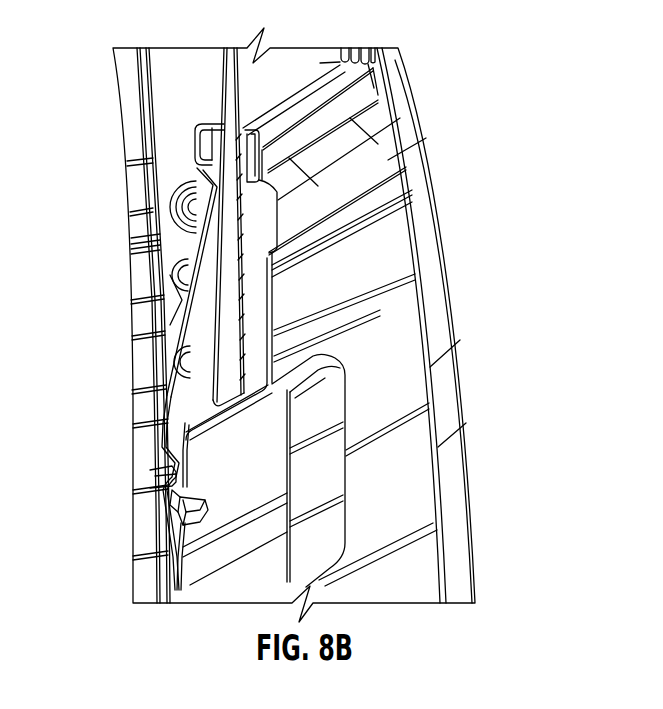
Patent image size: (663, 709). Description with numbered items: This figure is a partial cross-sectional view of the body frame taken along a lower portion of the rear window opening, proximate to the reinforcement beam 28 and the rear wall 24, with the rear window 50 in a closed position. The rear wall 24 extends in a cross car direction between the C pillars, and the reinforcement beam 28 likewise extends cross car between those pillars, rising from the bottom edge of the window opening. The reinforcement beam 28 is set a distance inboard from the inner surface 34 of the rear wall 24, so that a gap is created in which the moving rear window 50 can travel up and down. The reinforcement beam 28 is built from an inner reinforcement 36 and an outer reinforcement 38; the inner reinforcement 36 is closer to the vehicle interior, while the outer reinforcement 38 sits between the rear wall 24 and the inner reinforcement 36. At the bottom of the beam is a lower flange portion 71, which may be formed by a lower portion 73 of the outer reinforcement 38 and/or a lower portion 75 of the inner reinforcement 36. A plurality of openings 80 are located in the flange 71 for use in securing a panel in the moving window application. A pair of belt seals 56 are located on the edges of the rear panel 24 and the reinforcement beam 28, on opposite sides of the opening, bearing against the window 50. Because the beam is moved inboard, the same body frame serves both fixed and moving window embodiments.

The rear wall 24 is at (380, 307).
The reinforcement beam 28 is at (180, 300).
The inner surface 34 is at (273, 206).
The inner reinforcement 36 is at (180, 333).
The outer reinforcement 38 is at (207, 423).
The rear window 50 is at (352, 49).
The belt seals 56 is at (197, 167).
The lower flange portion 71 is at (243, 469).
The lower portion of outer reinforcement 73 is at (272, 437).
The lower portion of inner reinforcement 75 is at (155, 462).
The openings 80 is at (190, 503).